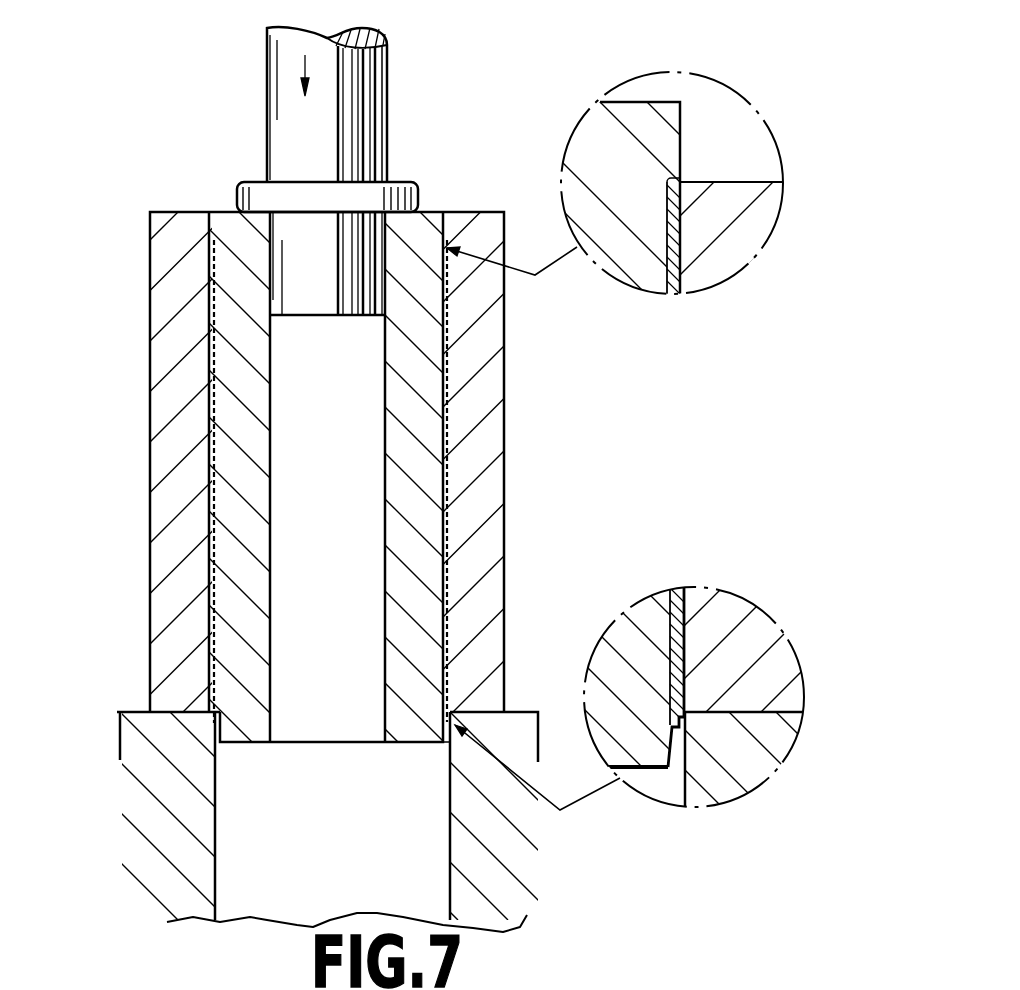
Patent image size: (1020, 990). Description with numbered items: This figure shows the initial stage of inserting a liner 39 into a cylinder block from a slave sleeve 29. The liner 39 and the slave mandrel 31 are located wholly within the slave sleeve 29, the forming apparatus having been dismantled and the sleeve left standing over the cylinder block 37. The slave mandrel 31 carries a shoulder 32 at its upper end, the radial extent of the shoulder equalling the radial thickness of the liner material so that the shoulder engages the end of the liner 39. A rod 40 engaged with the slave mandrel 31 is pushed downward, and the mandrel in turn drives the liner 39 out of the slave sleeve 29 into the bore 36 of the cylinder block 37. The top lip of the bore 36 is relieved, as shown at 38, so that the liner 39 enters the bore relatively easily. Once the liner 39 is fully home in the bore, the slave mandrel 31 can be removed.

The slave sleeve 29 is at (482, 447).
The slave mandrel 31 is at (258, 527).
The shoulder 32 is at (222, 232).
The bore 36 is at (338, 852).
The cylinder block 37 is at (472, 840).
The relieved top lip 38 is at (493, 737).
The liner 39 is at (447, 568).
The rod 40 is at (387, 97).